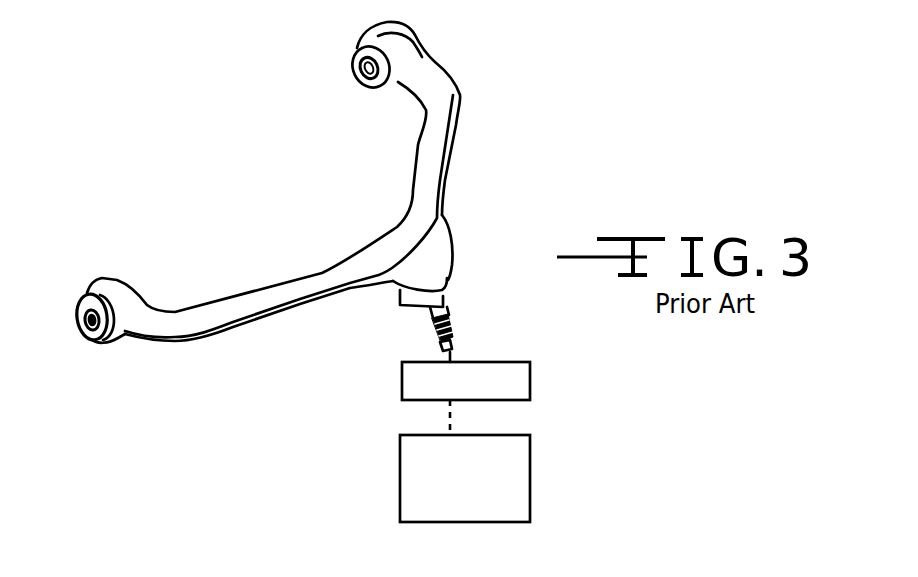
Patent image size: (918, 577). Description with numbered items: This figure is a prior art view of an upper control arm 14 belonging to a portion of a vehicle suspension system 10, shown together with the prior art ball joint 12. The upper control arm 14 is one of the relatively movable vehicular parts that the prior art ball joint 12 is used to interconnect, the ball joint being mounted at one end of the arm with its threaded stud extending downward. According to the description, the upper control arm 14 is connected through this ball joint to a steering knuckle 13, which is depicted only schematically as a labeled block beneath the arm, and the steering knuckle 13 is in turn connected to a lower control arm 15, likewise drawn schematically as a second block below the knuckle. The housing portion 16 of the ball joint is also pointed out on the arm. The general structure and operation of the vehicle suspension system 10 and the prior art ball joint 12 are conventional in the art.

The vehicle suspension system 10 is at (304, 192).
The prior art ball joint 12 is at (458, 312).
The steering knuckle 13 is at (530, 380).
The upper control arm 14 is at (462, 83).
The lower control arm 15 is at (530, 467).
The ball joint housing 16 is at (445, 249).